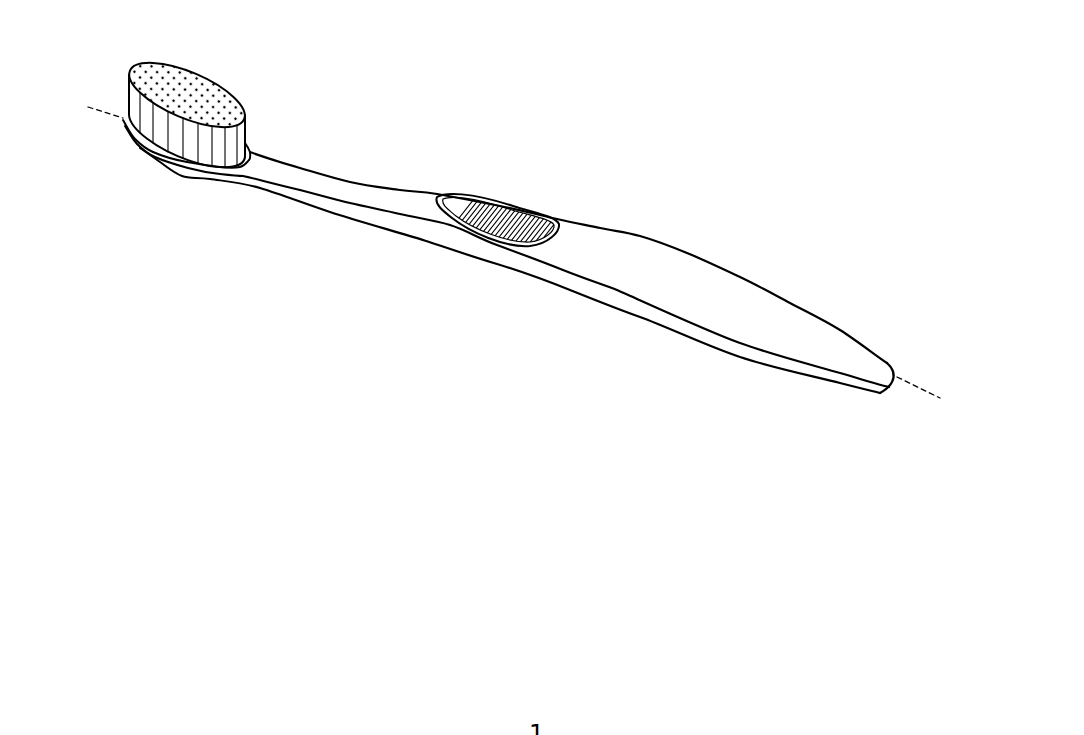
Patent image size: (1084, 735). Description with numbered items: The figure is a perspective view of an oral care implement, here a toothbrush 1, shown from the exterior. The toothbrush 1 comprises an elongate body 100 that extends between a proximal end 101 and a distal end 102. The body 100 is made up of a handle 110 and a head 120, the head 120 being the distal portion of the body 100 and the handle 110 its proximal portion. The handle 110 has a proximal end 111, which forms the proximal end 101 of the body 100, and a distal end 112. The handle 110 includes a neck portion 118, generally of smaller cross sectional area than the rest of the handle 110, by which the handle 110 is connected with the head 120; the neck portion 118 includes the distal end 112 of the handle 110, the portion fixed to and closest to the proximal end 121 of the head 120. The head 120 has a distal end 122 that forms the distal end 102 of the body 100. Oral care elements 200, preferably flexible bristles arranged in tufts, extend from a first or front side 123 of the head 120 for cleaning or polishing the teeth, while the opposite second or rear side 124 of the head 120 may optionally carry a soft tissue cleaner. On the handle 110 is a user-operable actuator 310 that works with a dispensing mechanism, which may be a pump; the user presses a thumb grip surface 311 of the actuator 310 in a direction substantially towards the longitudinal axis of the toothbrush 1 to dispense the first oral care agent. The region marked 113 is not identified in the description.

The toothbrush 1 is at (582, 118).
The body 100 is at (643, 235).
The proximal end of the body 101 is at (864, 421).
The proximal end of the handle 111 is at (894, 386).
The distal end of the body 102 is at (98, 152).
The distal end of the head 122 is at (123, 124).
The handle 110 is at (687, 253).
The distal end of the handle 112 is at (253, 176).
The handle top surface 113 is at (582, 235).
The neck portion 118 is at (310, 180).
The head 120 is at (207, 181).
The proximal end of the head 121 is at (250, 146).
The first side of the head 123 is at (157, 153).
The second side of the head 124 is at (183, 191).
The oral care elements 200 is at (223, 92).
The user-operable actuator 310 is at (548, 214).
The thumb grip surface 311 is at (489, 212).